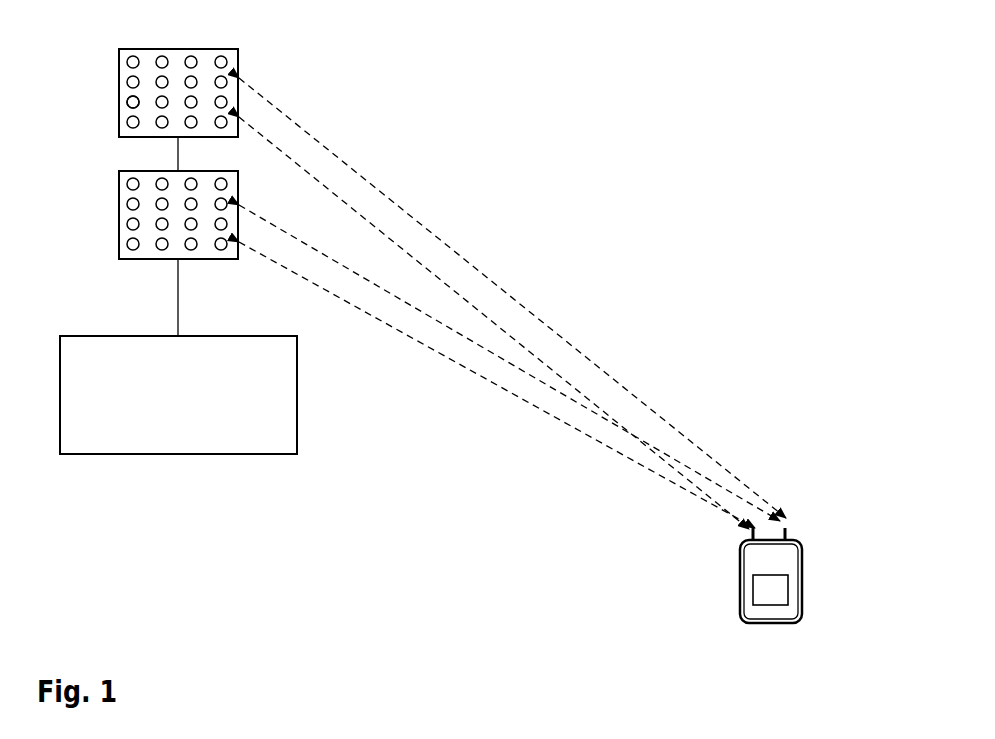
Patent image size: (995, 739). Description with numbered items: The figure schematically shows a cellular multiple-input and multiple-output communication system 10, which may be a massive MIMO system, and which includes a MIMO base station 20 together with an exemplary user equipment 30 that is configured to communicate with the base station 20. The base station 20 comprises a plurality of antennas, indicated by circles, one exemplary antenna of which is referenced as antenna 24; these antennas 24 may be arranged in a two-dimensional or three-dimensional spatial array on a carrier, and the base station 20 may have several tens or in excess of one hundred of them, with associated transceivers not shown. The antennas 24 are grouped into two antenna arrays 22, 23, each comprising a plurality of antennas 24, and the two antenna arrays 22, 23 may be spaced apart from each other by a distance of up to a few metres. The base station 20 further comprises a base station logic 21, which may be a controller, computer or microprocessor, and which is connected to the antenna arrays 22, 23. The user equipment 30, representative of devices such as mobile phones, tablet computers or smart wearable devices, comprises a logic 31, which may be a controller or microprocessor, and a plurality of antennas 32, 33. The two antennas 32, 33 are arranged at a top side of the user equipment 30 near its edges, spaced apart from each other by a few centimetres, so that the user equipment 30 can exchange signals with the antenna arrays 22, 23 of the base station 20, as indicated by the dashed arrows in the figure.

The communication system 10 is at (725, 122).
The MIMO base station 20 is at (302, 63).
The base station logic 21 is at (297, 454).
The antenna array 22 is at (114, 260).
The antenna array 23 is at (115, 53).
The antenna 24 is at (128, 102).
The user equipment 30 is at (767, 587).
The logic 31 is at (790, 597).
The antenna 32 is at (750, 535).
The antenna 33 is at (789, 533).